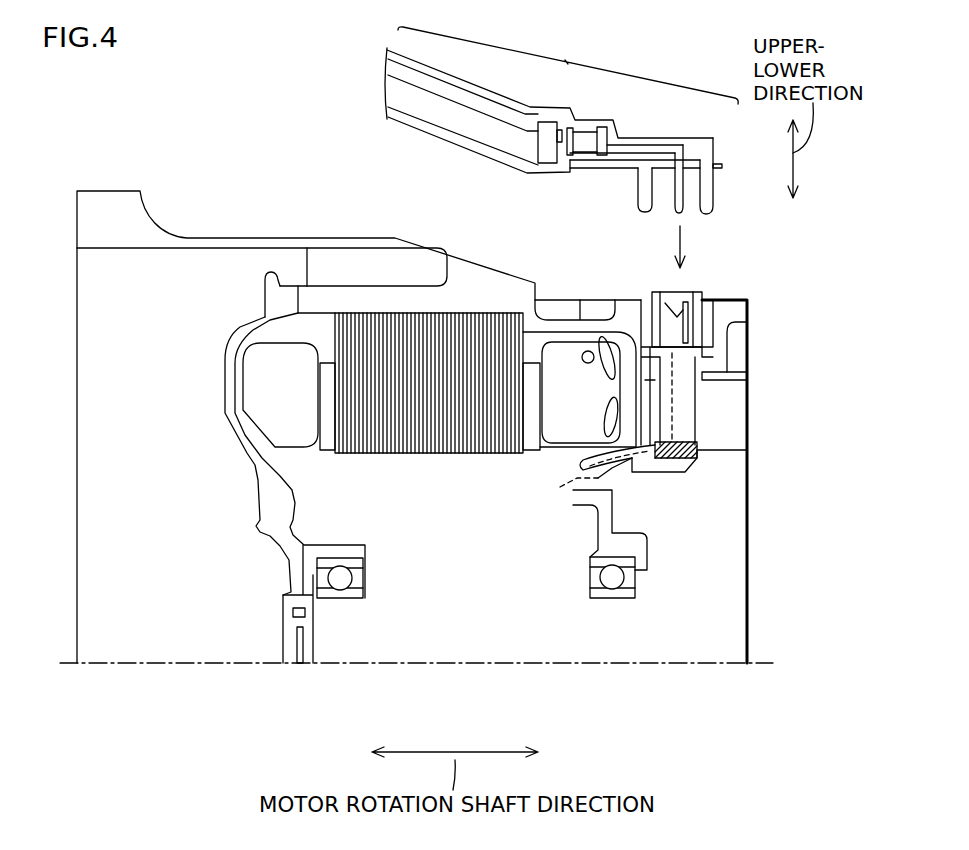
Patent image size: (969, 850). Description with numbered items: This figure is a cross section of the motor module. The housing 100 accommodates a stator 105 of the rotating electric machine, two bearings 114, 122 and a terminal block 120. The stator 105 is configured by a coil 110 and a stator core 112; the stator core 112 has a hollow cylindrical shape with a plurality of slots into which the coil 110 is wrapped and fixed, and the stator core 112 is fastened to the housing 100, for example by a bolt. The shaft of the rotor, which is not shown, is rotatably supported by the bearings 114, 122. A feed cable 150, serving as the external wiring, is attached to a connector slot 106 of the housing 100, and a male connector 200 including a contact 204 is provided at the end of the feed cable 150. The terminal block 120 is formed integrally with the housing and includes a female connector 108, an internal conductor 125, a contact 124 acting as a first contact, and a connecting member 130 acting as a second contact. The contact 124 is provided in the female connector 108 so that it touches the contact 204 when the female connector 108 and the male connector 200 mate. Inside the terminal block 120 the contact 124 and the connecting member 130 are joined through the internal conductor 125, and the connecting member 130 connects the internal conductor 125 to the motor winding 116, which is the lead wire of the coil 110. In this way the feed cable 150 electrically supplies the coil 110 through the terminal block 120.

The housing 100 is at (307, 246).
The stator 105 is at (446, 478).
The connector slot 106 is at (707, 313).
The female connector 108 is at (697, 330).
The coil 110 is at (263, 388).
The stator core 112 is at (450, 333).
The bearing 114 is at (338, 598).
The motor winding 116 is at (580, 462).
The terminal block 120 is at (698, 397).
The bearing 122 is at (612, 598).
The contact 124 is at (665, 292).
The internal conductor 125 is at (672, 408).
The connecting member 130 is at (694, 463).
The feed cable 150 is at (561, 100).
The male connector 200 is at (643, 137).
The contact 204 is at (680, 182).